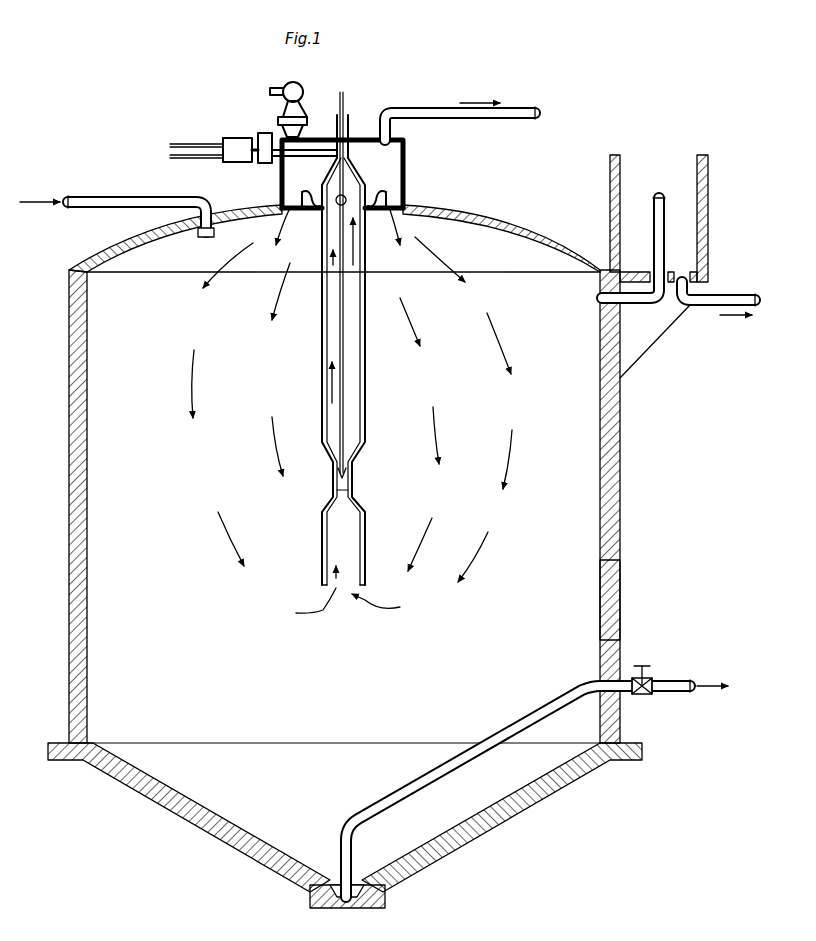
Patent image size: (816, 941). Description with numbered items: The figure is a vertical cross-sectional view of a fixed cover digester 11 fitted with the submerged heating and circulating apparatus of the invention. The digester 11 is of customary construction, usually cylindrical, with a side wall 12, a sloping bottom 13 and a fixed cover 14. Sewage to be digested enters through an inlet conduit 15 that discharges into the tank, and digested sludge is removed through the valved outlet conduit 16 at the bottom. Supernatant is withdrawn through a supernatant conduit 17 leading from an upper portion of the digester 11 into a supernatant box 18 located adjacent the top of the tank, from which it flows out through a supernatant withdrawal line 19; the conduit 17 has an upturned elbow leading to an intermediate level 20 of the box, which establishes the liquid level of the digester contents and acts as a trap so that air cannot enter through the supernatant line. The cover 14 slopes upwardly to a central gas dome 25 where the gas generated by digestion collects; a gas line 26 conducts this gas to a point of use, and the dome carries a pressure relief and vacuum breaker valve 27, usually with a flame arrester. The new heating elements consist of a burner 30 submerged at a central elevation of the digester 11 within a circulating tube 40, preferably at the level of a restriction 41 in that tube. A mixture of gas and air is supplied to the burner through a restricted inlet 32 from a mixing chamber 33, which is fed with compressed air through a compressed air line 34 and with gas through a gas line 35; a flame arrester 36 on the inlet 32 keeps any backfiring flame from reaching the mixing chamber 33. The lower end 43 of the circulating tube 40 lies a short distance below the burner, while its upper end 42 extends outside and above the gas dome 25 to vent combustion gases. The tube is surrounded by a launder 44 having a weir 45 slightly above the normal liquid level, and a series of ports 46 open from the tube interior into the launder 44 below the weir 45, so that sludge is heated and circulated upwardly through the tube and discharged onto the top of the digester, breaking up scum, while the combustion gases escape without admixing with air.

The digester 11 is at (620, 443).
The side wall 12 is at (620, 606).
The sloping bottom 13 is at (508, 818).
The fixed cover 14 is at (480, 212).
The inlet conduit 15 is at (107, 197).
The valved outlet conduit 16 is at (673, 680).
The supernatant conduit 17 is at (632, 303).
The supernatant box 18 is at (708, 214).
The supernatant withdrawal line 19 is at (725, 293).
The intermediate level 20 is at (663, 197).
The gas dome 25 is at (402, 162).
The gas line 26 is at (456, 110).
The pressure relief and vacuum breaker valve 27 is at (298, 98).
The burner 30 is at (352, 468).
The restricted inlet 32 is at (345, 392).
The mixing chamber 33 is at (225, 162).
The compressed air line 34 is at (190, 158).
The gas line 35 is at (195, 144).
The flame arrester 36 is at (263, 133).
The circulating tube 40 is at (363, 370).
The restriction 41 is at (333, 487).
The upper end 42 is at (342, 92).
The lower end 43 is at (327, 612).
The launder 44 is at (440, 203).
The weir 45 is at (400, 190).
The ports 46 is at (348, 197).